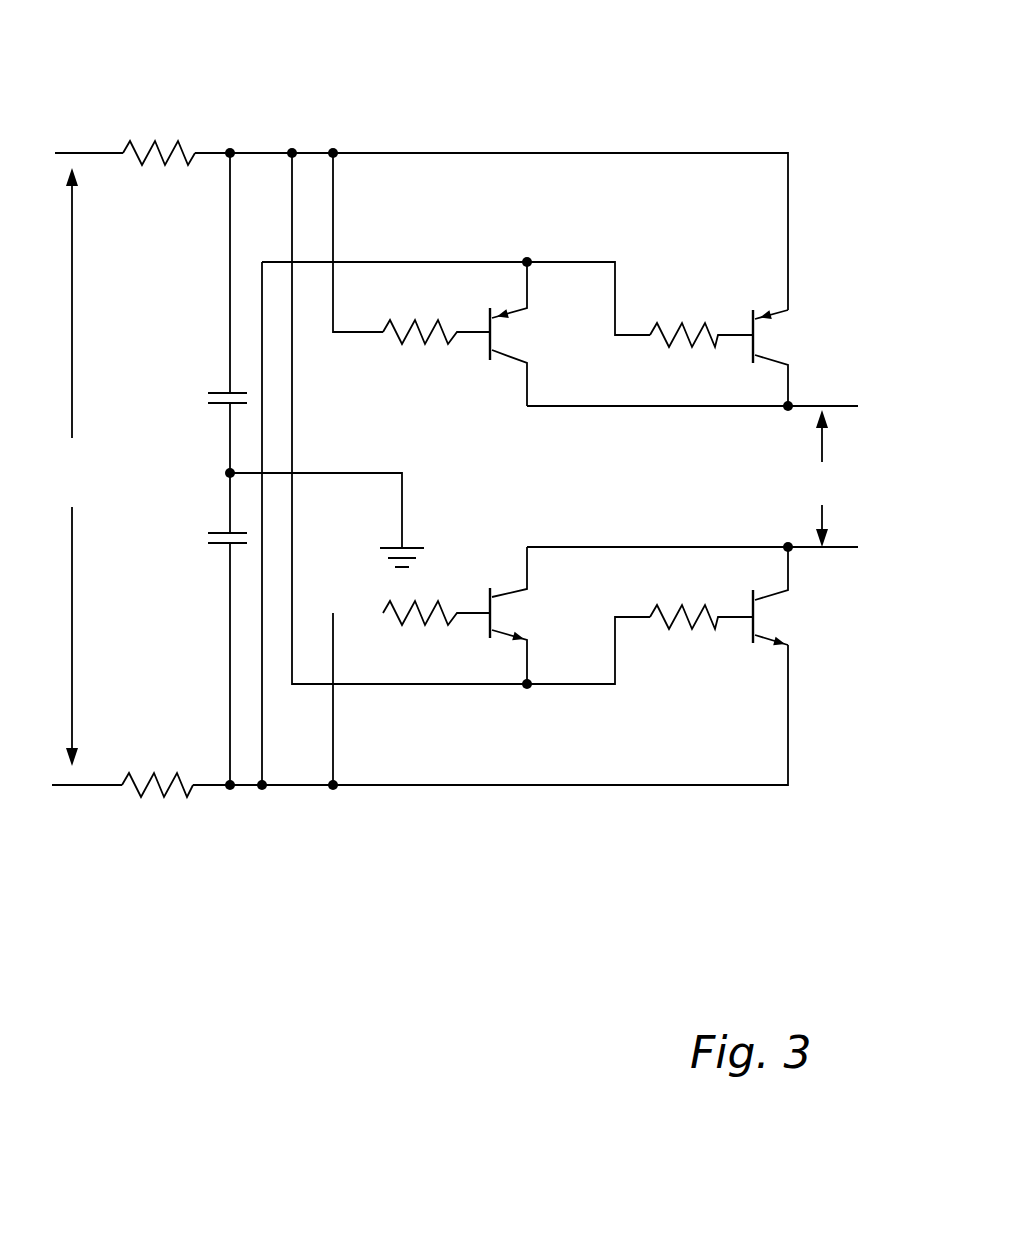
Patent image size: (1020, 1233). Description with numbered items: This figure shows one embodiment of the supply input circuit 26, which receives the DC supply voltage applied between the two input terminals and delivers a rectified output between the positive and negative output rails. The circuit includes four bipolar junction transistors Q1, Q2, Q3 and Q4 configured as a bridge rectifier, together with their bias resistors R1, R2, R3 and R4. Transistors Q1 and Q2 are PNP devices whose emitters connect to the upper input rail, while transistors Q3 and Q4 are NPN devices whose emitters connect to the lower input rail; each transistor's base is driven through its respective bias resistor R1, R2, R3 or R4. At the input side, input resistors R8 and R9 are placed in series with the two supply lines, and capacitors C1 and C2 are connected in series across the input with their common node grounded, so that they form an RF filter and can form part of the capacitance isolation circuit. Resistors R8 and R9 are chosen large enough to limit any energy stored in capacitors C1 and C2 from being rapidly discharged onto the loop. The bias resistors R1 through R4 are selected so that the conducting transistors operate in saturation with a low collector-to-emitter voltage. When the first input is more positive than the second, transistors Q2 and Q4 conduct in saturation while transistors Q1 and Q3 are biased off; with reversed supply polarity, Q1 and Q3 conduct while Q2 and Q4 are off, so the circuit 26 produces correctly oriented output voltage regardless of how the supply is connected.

The supply input circuit 26 is at (765, 85).
The bias resistor R1 is at (436, 350).
The bias resistor R2 is at (701, 353).
The bias resistor R3 is at (436, 631).
The bias resistor R4 is at (701, 599).
The input resistor R8 is at (159, 137).
The input resistor R9 is at (157, 767).
The capacitor C1 is at (204, 402).
The capacitor C2 is at (204, 542).
The PNP bipolar junction transistor Q1 is at (524, 334).
The PNP bipolar junction transistor Q2 is at (786, 358).
The NPN bipolar junction transistor Q3 is at (524, 615).
The NPN bipolar junction transistor Q4 is at (786, 596).